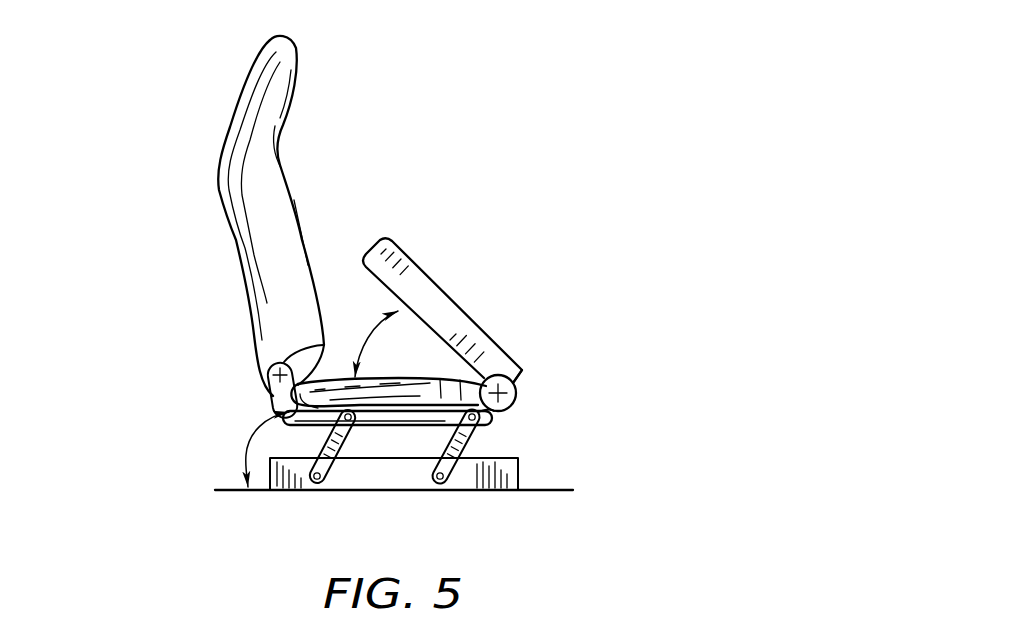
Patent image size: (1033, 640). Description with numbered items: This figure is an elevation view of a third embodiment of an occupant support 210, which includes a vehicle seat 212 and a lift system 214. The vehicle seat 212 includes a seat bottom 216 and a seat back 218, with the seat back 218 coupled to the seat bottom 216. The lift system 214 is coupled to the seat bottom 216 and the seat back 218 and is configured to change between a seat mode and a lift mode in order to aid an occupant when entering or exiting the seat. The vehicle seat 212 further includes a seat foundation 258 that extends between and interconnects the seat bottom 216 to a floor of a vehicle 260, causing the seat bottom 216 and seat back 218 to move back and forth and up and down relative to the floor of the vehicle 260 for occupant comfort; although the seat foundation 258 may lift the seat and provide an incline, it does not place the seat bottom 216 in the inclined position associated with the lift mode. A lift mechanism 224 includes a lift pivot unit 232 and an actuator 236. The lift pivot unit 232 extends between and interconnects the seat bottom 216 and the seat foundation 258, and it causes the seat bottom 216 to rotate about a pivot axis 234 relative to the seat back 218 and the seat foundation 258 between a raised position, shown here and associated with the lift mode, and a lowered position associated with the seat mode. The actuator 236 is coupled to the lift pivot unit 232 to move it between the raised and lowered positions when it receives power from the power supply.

The occupant support 210 is at (692, 190).
The vehicle seat 212 is at (392, 132).
The lift system 214 is at (726, 414).
The seat bottom 216 is at (455, 285).
The seat back 218 is at (236, 262).
The lift mechanism 224 is at (618, 378).
The lift pivot unit 232 is at (516, 393).
The pivot axis 234 is at (515, 378).
The actuator 236 is at (505, 409).
The seat foundation 258 is at (318, 443).
The floor of a vehicle 260 is at (240, 490).